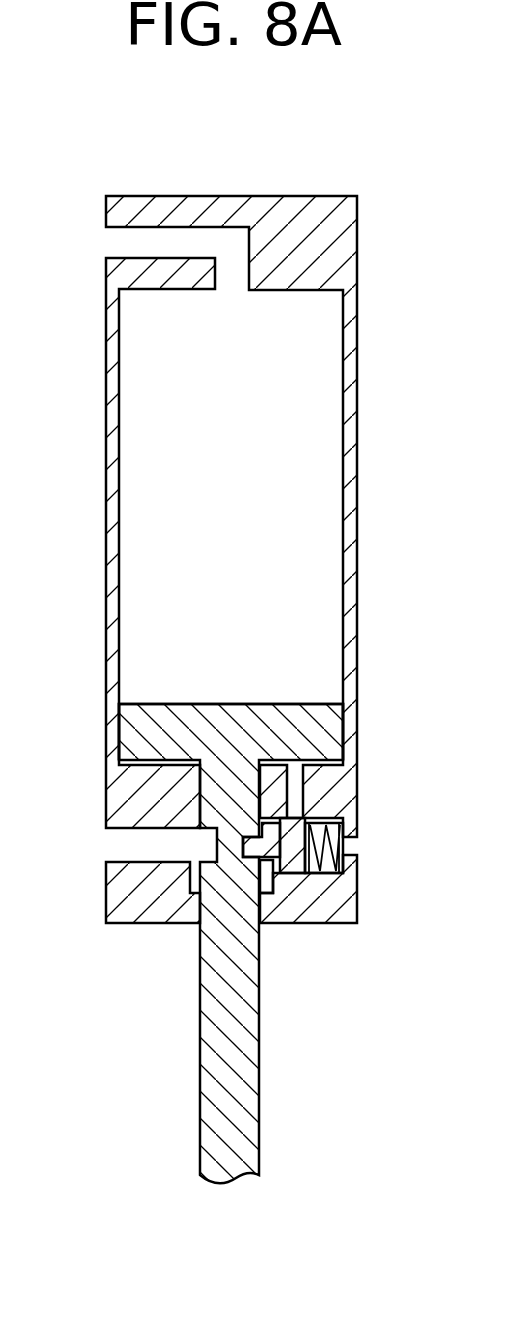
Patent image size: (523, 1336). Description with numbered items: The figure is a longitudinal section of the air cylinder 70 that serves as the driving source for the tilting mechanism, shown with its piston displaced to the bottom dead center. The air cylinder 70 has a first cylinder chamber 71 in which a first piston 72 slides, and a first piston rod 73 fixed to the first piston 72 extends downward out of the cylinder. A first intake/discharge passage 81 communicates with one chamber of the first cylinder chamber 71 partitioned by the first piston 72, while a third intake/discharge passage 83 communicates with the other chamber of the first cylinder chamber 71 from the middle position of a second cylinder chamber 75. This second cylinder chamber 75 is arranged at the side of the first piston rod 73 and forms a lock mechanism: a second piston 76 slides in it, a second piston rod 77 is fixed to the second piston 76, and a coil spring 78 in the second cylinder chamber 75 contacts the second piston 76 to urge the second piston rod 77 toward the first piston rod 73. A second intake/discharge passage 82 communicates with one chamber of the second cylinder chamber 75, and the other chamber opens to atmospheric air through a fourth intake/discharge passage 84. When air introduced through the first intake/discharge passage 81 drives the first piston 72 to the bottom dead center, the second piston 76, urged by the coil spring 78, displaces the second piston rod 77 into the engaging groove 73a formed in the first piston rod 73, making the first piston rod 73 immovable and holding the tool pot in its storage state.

The air cylinder 70 is at (336, 168).
The first cylinder chamber 71 is at (310, 386).
The first piston 72 is at (333, 728).
The first piston rod 73 is at (241, 1022).
The engaging groove 73a is at (256, 825).
The second cylinder chamber 75 is at (272, 875).
The second piston 76 is at (272, 872).
The second piston rod 77 is at (258, 858).
The coil spring 78 is at (325, 840).
The first intake/discharge passage 81 is at (114, 245).
The second intake/discharge passage 82 is at (115, 843).
The third intake/discharge passage 83 is at (300, 789).
The fourth intake/discharge passage 84 is at (345, 847).